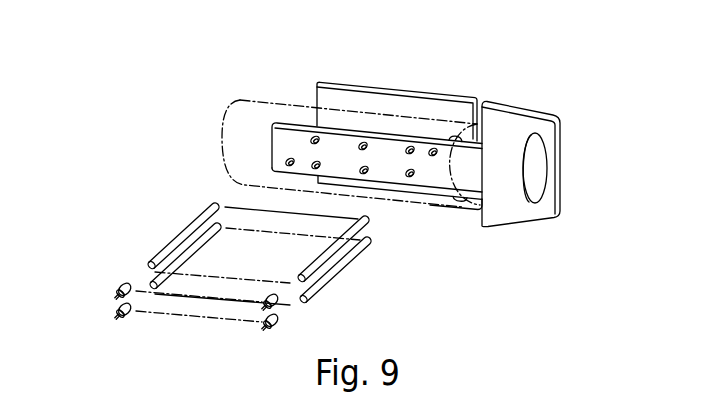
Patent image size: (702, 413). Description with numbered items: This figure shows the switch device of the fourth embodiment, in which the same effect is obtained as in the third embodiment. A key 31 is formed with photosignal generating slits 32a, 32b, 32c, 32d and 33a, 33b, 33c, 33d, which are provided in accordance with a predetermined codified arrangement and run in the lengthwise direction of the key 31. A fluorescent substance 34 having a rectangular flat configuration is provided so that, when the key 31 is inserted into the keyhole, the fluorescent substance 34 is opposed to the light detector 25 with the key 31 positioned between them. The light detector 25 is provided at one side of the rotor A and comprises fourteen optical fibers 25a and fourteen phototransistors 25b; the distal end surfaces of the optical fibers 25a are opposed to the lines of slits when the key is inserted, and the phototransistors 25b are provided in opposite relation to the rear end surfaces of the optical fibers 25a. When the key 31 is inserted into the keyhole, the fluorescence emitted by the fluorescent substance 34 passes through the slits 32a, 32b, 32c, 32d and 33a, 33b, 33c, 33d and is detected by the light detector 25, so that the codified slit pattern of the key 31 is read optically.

The rotor A is at (227, 122).
The light detector 25 is at (340, 274).
The optical fibers 25a is at (170, 249).
The phototransistors 25b is at (118, 283).
The key 31 is at (514, 102).
The photosignal generating slit 32a is at (312, 137).
The photosignal generating slit 32b is at (362, 143).
The photosignal generating slit 32c is at (409, 147).
The photosignal generating slit 32d is at (433, 148).
The photosignal generating slit 33a is at (287, 166).
The photosignal generating slit 33b is at (313, 169).
The photosignal generating slit 33c is at (363, 174).
The photosignal generating slit 33d is at (410, 177).
The fluorescent substance 34 is at (319, 94).